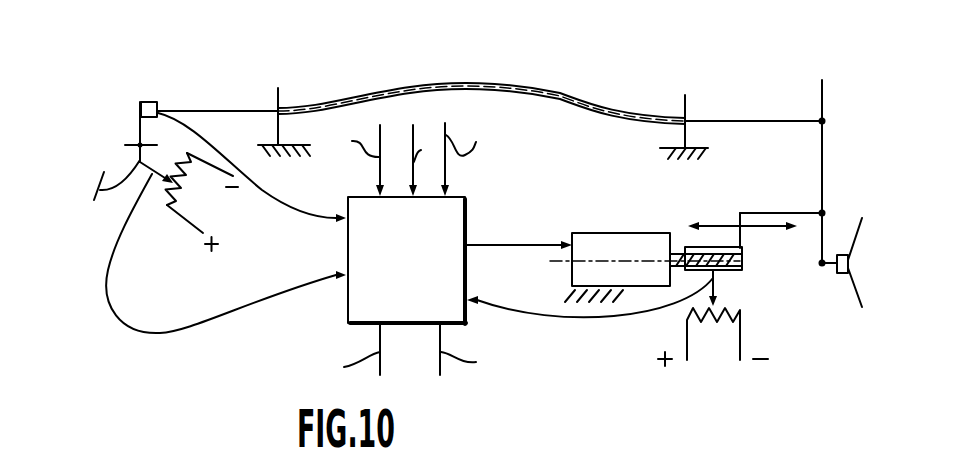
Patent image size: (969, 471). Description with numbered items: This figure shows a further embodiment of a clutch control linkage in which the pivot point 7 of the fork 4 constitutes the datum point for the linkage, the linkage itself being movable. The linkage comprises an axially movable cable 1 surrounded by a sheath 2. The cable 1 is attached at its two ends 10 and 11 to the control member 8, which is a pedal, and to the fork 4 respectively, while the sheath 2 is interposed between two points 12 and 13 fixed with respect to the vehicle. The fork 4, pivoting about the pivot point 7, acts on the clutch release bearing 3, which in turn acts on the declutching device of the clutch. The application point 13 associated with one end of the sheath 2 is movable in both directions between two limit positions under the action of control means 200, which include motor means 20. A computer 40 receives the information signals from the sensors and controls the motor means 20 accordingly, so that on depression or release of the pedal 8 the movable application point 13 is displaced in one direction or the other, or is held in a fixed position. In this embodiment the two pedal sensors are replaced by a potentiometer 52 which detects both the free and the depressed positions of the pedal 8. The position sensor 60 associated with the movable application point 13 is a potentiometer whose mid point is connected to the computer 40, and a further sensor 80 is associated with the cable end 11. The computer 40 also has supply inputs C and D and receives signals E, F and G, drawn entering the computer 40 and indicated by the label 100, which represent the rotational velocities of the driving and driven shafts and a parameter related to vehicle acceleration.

The cable 1 is at (191, 101).
The sheath 2 is at (386, 82).
The clutch release bearing 3 is at (838, 270).
The fork 4 is at (810, 166).
The pivot point 7 is at (822, 213).
The control member 8 is at (116, 167).
The cable end 10 is at (140, 102).
The cable end 11 is at (822, 80).
The fixed point 12 is at (278, 100).
The application point 13 is at (685, 97).
The motor means 20 is at (592, 217).
The computer 40 is at (437, 262).
The potentiometer 52 is at (180, 232).
The position sensor 60 is at (735, 296).
The sensor 80 is at (157, 92).
The controller 100 is at (465, 169).
The control means 200 is at (635, 221).